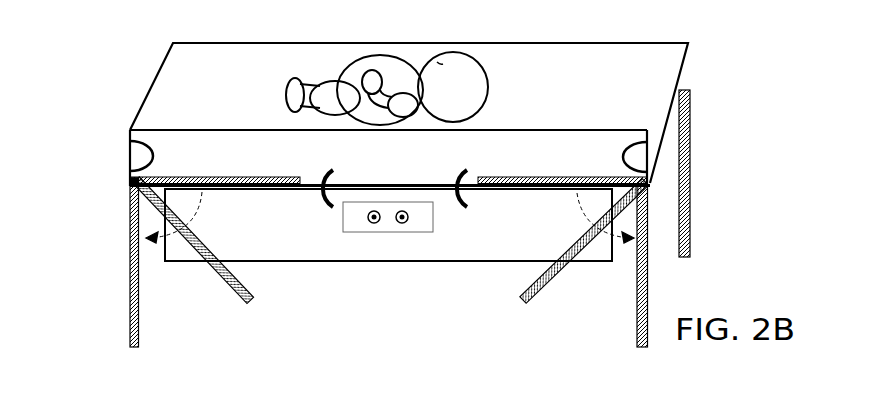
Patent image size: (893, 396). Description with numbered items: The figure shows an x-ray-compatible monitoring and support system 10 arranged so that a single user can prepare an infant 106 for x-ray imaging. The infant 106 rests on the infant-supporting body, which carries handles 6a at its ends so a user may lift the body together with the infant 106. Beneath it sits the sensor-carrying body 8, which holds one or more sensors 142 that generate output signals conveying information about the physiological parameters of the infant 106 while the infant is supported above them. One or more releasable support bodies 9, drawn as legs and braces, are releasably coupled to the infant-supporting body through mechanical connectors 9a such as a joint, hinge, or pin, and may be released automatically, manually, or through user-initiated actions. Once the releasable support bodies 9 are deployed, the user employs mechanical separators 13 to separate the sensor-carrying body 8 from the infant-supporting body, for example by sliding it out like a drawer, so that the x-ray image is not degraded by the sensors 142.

The x-ray-compatible monitoring and support system 10 is at (117, 340).
The handle 6a is at (136, 152).
The releasable support body 9 is at (277, 176).
The mechanical connector 9a is at (131, 182).
The sensor-carrying body 8 is at (438, 245).
The mechanical separator 13 is at (323, 199).
The sensor 142 is at (408, 233).
The infant 106 is at (387, 88).